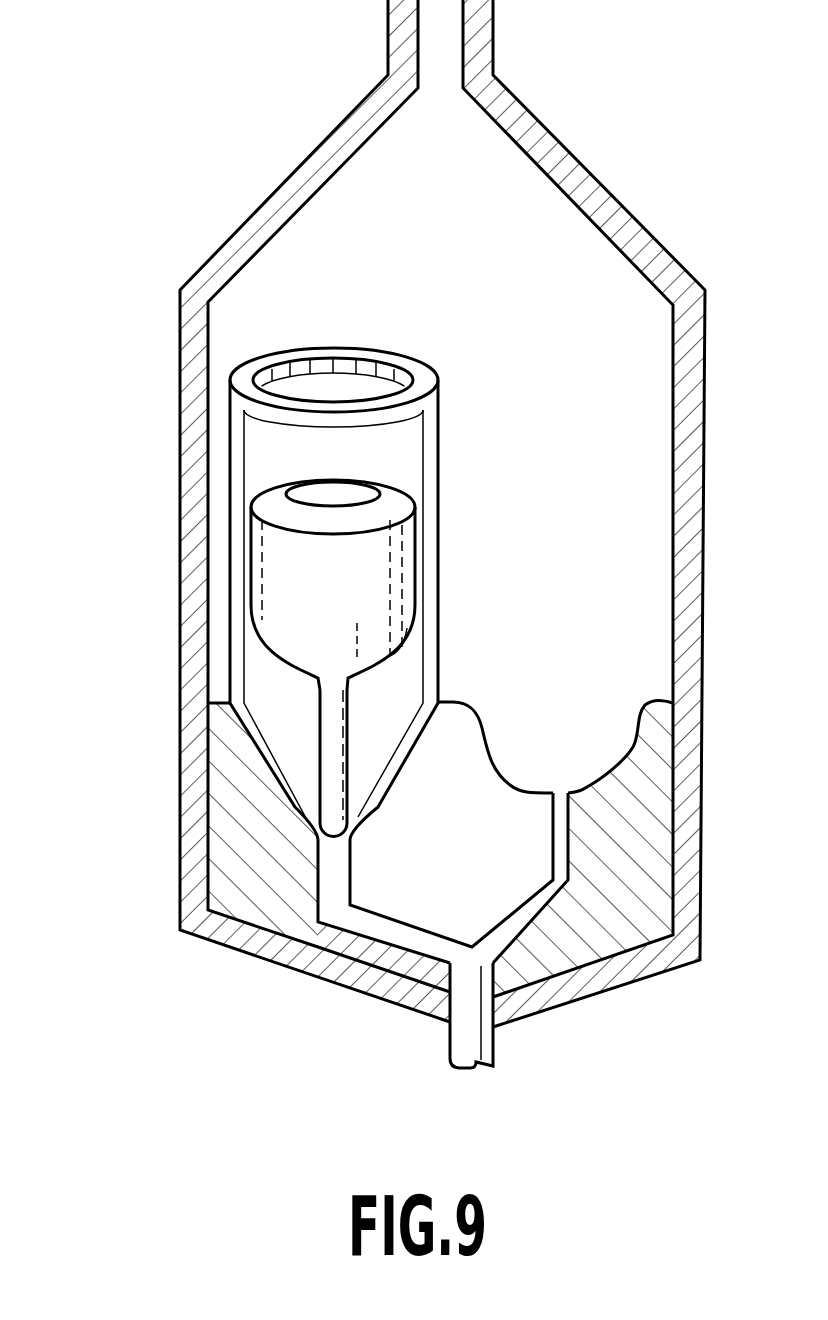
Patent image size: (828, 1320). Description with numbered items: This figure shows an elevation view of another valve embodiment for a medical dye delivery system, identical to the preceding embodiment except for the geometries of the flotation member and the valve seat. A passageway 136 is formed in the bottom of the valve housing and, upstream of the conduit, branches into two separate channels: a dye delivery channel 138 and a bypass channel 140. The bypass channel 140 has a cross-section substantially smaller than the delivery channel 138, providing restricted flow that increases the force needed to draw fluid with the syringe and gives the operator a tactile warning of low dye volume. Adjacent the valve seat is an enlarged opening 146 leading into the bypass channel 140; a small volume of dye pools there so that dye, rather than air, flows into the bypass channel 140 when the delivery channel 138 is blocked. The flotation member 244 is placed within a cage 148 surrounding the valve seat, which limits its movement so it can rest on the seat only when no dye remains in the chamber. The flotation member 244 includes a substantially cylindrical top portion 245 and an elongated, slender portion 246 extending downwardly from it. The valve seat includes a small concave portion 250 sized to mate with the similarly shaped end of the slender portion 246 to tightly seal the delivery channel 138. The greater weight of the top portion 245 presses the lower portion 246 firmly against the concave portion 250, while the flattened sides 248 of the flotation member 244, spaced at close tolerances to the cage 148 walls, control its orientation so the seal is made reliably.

The passageway 136 is at (447, 1042).
The dye delivery channel 138 is at (318, 973).
The bypass channel 140 is at (533, 918).
The enlarged opening 146 is at (630, 747).
The cage 148 is at (337, 347).
The flotation member 244 is at (273, 498).
The substantially cylindrical top portion 245 is at (390, 515).
The elongated, slender portion 246 is at (320, 736).
The sides 248 is at (413, 587).
The concave portion 250 is at (305, 843).